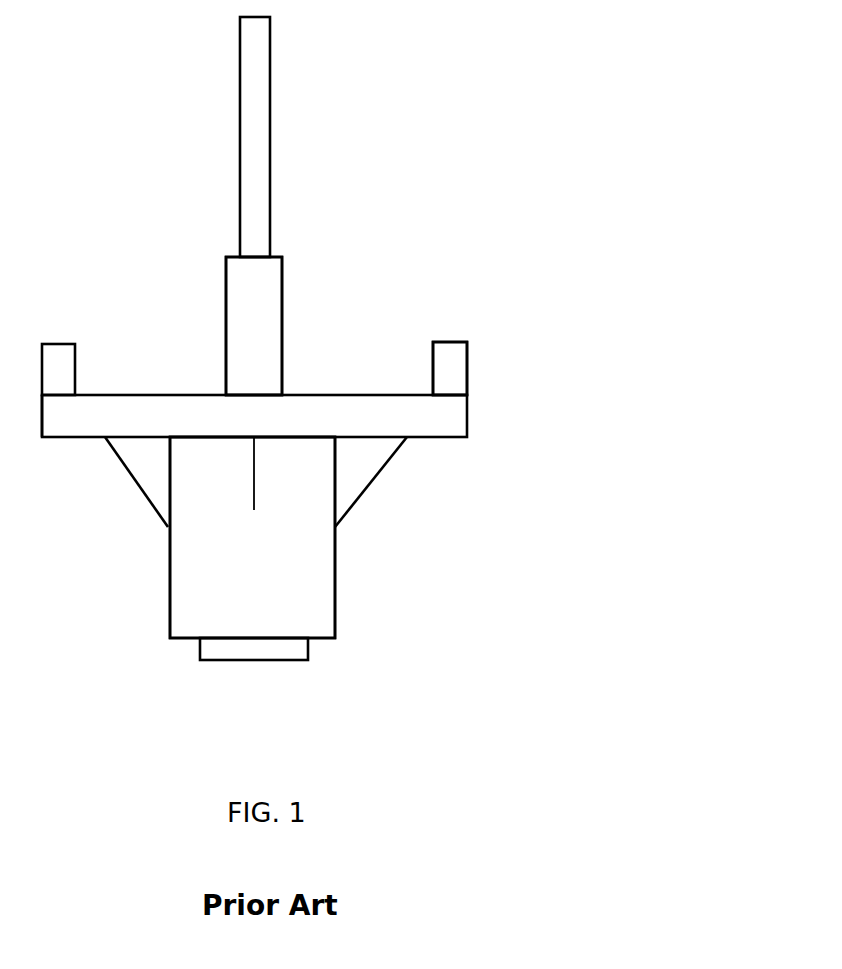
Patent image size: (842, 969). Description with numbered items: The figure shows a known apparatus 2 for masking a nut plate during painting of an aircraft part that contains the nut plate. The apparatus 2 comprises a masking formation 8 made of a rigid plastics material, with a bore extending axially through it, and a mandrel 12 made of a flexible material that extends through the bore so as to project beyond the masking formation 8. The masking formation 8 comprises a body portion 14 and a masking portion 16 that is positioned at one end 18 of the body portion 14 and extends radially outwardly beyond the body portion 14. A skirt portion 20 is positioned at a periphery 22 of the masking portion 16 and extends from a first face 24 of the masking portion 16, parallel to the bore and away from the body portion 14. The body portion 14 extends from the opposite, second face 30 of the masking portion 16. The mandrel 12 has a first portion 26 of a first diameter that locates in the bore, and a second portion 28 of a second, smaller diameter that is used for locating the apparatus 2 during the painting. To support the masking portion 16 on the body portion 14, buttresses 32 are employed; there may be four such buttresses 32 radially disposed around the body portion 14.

The apparatus 2 is at (386, 103).
The masking formation 8 is at (168, 582).
The mandrel 12 is at (224, 319).
The body portion 14 is at (335, 607).
The masking portion 16 is at (458, 418).
The end 18 is at (254, 488).
The skirt portion 20 is at (467, 368).
The periphery 22 is at (447, 393).
The first face 24 is at (104, 395).
The first portion 26 is at (263, 344).
The second portion 28 is at (258, 178).
The second face 30 is at (70, 438).
The buttresses 32 is at (256, 482).